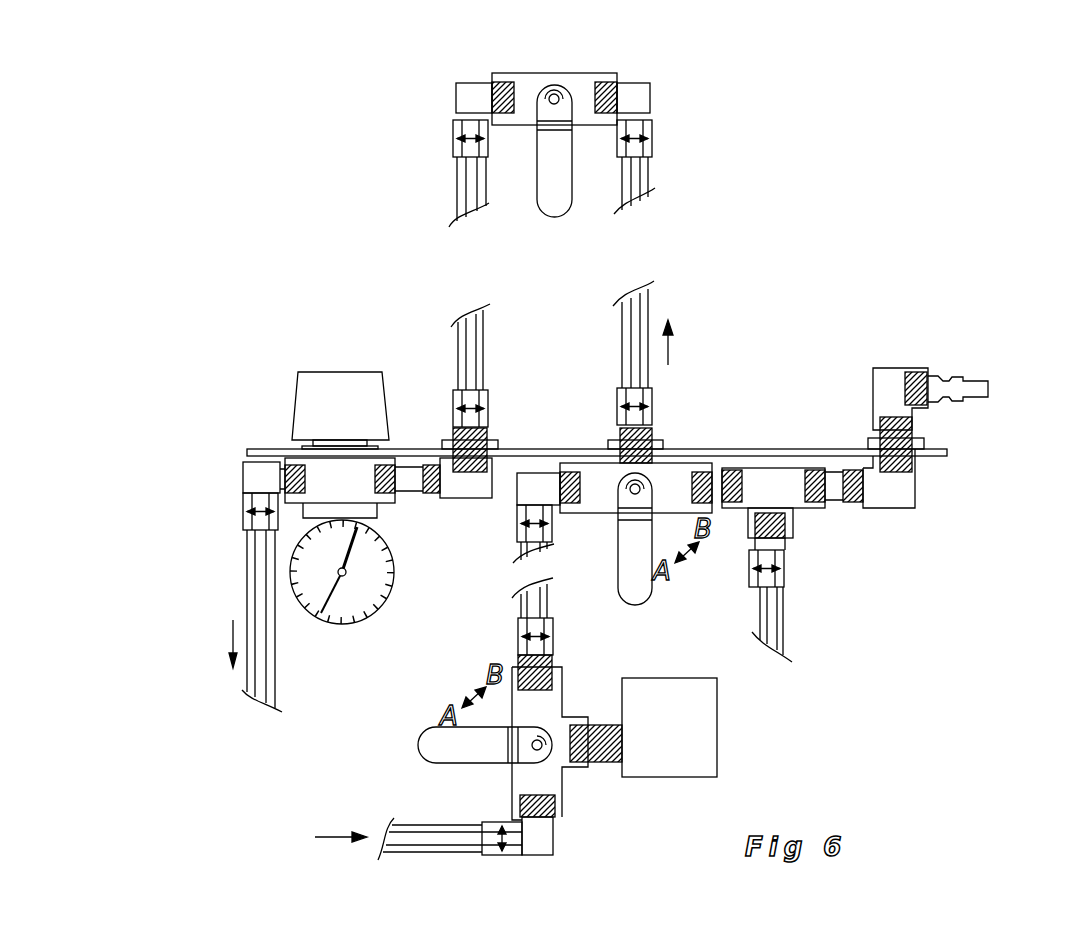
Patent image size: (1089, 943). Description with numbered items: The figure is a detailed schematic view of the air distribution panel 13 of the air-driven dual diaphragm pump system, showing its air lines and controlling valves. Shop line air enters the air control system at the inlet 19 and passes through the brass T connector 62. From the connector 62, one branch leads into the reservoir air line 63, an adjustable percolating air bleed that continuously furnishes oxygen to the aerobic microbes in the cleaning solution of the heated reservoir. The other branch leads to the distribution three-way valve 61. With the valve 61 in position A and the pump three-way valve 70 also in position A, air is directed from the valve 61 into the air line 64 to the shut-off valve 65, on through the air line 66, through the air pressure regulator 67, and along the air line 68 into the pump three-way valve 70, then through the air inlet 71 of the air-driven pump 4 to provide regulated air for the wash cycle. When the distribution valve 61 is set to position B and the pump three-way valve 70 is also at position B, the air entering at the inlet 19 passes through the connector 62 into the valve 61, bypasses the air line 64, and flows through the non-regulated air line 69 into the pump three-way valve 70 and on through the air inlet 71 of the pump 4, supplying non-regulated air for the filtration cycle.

The air-driven pump 4 is at (682, 745).
The air distribution panel 13 is at (956, 538).
The inlet 19 is at (990, 386).
The distribution three-way valve 61 is at (666, 487).
The brass "T" connector 62 is at (786, 510).
The reservoir air line 63 is at (786, 626).
The air line 64 is at (638, 285).
The shut-off valve 65 is at (583, 80).
The air line 66 is at (470, 310).
The air pressure regulator 67 is at (358, 496).
The air line 68 is at (262, 578).
The non-regulated air line 69 is at (553, 585).
The pump three-way valve 70 is at (545, 773).
The air inlet 71 is at (605, 723).